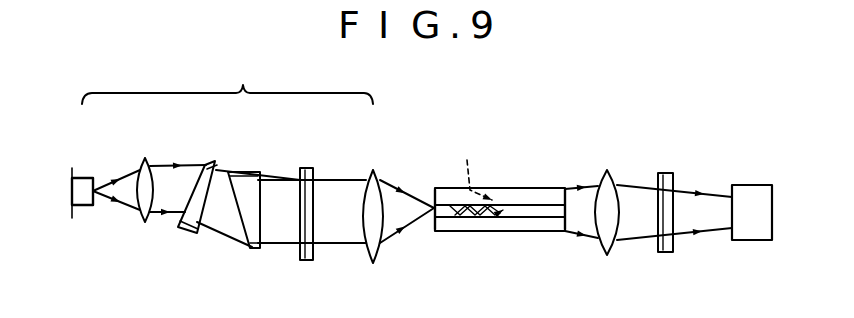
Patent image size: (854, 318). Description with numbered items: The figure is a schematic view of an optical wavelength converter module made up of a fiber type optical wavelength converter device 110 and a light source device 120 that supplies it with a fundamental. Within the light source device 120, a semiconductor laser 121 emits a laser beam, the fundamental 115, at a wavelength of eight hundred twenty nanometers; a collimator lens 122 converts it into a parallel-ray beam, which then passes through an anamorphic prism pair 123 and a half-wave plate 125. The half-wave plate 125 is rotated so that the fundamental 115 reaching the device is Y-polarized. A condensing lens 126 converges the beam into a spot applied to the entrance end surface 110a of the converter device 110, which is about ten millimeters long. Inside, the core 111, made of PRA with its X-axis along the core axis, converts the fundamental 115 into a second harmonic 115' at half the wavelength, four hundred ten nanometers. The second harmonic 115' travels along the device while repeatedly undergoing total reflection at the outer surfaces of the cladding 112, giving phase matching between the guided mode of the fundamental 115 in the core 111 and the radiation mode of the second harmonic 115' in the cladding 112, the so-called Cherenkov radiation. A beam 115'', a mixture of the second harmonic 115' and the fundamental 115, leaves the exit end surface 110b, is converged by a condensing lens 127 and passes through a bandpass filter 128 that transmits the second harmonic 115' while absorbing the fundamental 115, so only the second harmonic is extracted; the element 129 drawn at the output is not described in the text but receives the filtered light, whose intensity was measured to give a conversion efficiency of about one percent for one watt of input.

The light source device 120 is at (227, 81).
The semiconductor laser 121 is at (87, 178).
The collimator lens 122 is at (157, 167).
The anamorphic prism pair 123 is at (238, 169).
The λ/2 plate 125 is at (305, 185).
The condensing lens 126 is at (362, 190).
The fundamental 115 is at (365, 235).
The second harmonic 115' is at (579, 162).
The emitted beam 115'' is at (590, 155).
The optical wavelength converter device 110 is at (504, 148).
The entrance end surface 110a is at (432, 215).
The exit end surface 110b is at (567, 223).
The core 111 is at (528, 218).
The cladding 112 is at (543, 195).
The condensing lens 127 is at (613, 243).
The bandpass filter 128 is at (667, 252).
The photodetector 129 is at (753, 240).